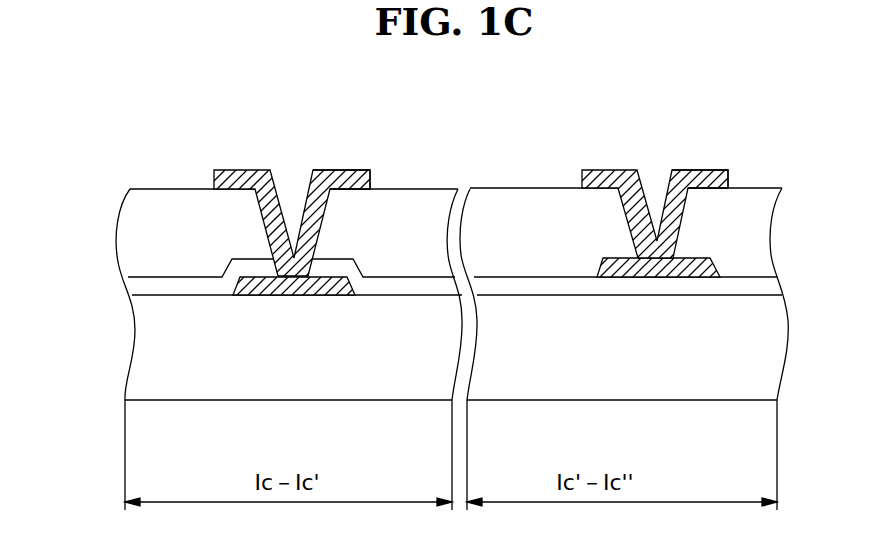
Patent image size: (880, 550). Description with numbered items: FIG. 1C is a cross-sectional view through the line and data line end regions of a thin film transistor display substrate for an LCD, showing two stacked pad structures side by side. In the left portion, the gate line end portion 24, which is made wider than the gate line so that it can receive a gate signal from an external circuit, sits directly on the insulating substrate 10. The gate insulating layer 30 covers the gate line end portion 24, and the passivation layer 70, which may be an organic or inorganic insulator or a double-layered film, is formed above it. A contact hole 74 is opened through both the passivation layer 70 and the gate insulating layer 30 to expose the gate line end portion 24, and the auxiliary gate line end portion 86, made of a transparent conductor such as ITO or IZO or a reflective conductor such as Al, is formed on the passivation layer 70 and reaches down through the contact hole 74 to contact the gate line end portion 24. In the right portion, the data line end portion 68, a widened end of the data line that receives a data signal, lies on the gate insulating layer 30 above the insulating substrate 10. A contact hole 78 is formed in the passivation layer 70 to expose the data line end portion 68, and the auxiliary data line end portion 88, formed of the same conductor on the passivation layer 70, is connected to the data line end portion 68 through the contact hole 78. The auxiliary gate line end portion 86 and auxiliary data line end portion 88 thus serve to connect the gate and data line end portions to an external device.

The insulating substrate 10 is at (158, 370).
The gate line end portion 24 is at (243, 290).
The gate insulating layer 30 is at (403, 285).
The contact hole 74 is at (292, 178).
The auxiliary gate line end portion 86 is at (346, 170).
The passivation layer 70 is at (505, 258).
The data line end portion 68 is at (650, 268).
The contact hole 78 is at (655, 170).
The auxiliary data line end portion 88 is at (706, 170).